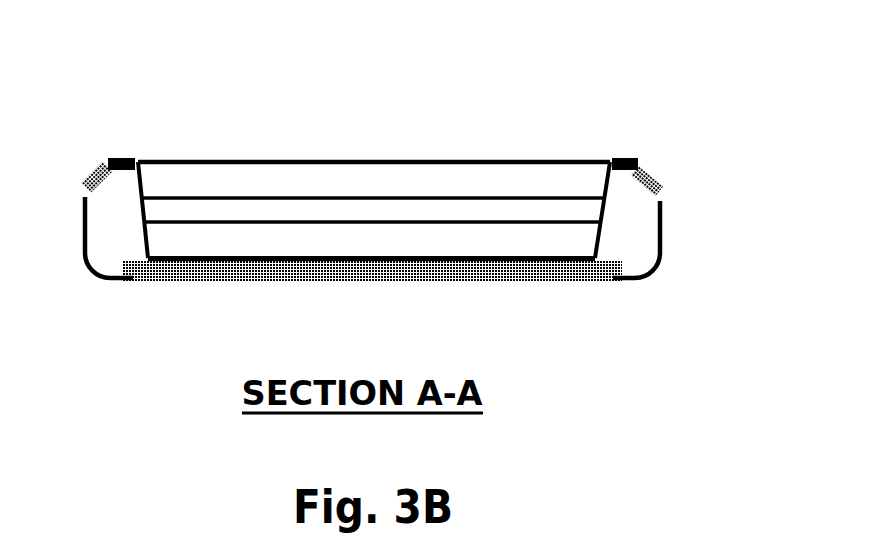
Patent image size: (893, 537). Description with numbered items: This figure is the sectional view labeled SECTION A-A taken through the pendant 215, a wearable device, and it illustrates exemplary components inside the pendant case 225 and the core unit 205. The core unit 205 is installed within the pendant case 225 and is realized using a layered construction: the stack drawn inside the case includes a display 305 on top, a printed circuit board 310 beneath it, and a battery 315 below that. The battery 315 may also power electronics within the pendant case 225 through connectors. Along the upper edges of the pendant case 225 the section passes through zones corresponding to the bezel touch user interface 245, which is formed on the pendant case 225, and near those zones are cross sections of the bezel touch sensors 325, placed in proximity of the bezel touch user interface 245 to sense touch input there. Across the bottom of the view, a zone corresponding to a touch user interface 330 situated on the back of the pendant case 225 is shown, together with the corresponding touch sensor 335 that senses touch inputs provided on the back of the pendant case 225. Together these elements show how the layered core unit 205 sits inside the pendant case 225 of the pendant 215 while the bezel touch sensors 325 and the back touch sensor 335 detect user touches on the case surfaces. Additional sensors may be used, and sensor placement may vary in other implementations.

The pendant 215 is at (75, 36).
The core unit 205 is at (140, 158).
The pendant case 225 is at (663, 233).
The bezel touch user interface 245 is at (86, 166).
The display 305 is at (257, 183).
The printed circuit board 310 is at (328, 215).
The battery 315 is at (402, 243).
The bezel touch sensors 325 is at (103, 190).
The touch user interface 330 is at (412, 277).
The touch sensor 335 is at (315, 265).